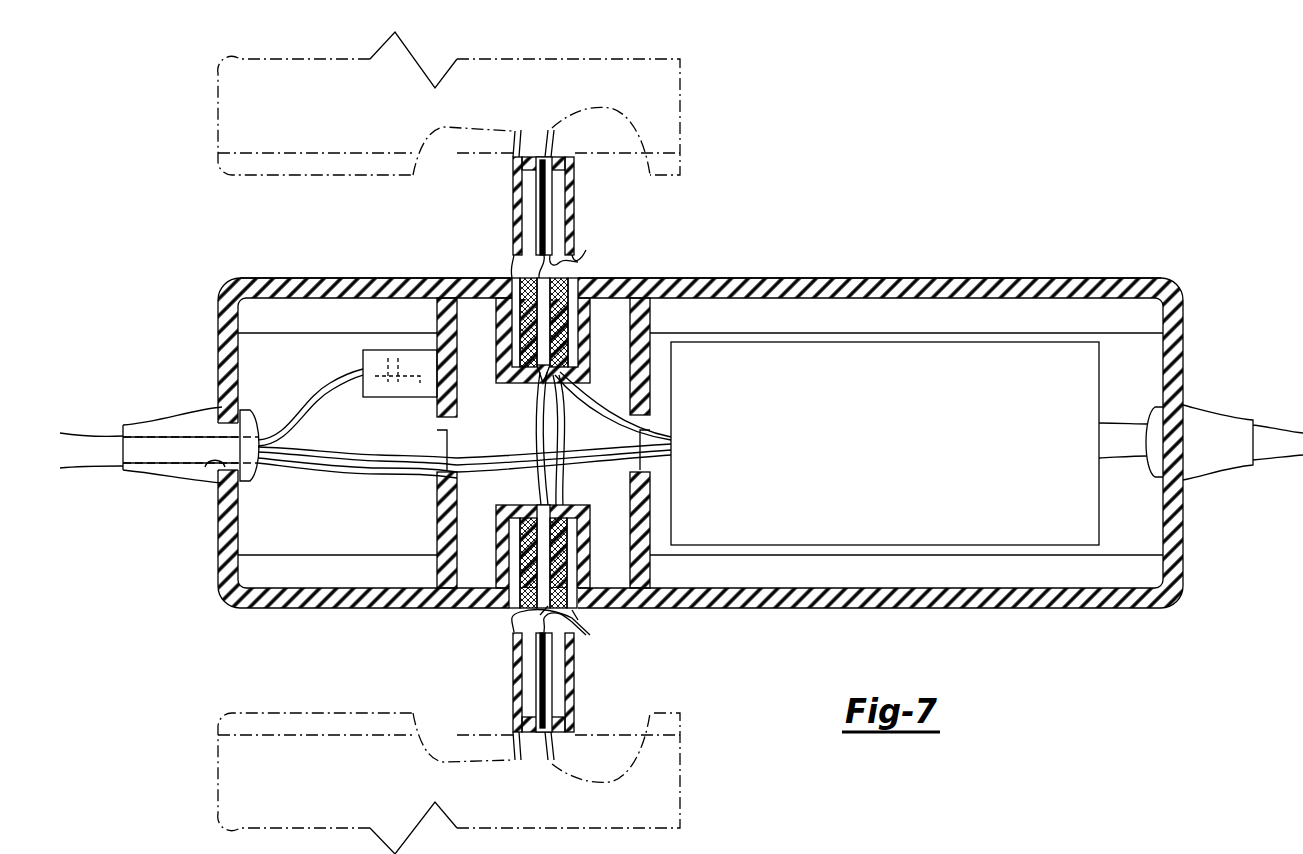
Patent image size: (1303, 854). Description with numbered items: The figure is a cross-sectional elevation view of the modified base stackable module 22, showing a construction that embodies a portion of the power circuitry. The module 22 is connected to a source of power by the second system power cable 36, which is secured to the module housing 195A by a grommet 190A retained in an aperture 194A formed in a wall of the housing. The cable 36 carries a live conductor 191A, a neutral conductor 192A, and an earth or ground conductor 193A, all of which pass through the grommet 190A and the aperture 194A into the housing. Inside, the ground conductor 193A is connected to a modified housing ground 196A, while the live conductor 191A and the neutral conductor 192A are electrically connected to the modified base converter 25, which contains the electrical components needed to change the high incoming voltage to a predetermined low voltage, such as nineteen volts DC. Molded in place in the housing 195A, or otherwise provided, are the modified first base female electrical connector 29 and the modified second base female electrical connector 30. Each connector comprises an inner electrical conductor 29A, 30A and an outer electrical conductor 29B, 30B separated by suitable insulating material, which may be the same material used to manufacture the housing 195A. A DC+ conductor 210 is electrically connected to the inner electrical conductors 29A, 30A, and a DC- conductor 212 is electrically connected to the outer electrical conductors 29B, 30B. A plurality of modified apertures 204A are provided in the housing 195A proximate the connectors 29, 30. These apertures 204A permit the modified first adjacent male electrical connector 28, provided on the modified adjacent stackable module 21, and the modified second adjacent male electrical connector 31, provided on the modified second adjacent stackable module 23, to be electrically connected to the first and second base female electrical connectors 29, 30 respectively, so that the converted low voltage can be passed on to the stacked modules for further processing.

The modified at least one adjacent stackable module 21 is at (218, 114).
The modified base stackable module 22 is at (218, 328).
The modified second adjacent stackable module 23 is at (218, 810).
The modified base converter 25 is at (900, 444).
The modified first adjacent male electrical connector 28 is at (586, 201).
The modified first base female electrical connector 29 is at (546, 364).
The inner electrical conductor 29A is at (568, 347).
The outer electrical conductor 29B is at (520, 346).
The modified second base female electrical connector 30 is at (544, 540).
The inner electrical conductor 30A is at (567, 550).
The outer electrical conductor 30B is at (520, 532).
The modified second adjacent male electrical connector 31 is at (586, 681).
The second system power cable 36 is at (82, 470).
The grommet 190A is at (172, 420).
The live conductor 191A is at (340, 455).
The neutral conductor 192A is at (320, 474).
The ground conductor 193A is at (291, 420).
The aperture 194A is at (214, 468).
The module housing 195A is at (977, 278).
The modified housing ground 196A is at (368, 350).
The modified apertures 204A is at (586, 250).
The DC+ conductor 210 is at (660, 440).
The DC- conductor 212 is at (664, 450).